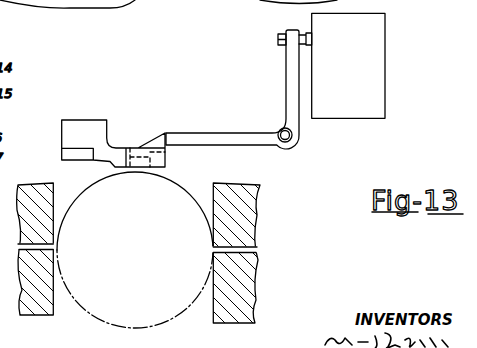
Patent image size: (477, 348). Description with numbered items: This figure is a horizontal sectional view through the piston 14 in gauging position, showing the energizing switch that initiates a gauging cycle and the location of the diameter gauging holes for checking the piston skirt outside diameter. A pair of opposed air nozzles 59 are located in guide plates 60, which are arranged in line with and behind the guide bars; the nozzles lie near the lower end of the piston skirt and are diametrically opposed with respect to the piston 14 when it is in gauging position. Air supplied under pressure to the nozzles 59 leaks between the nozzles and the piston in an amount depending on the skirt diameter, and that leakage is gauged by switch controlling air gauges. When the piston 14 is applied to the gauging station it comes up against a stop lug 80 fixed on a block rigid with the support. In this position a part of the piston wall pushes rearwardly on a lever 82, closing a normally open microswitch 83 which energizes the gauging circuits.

The piston 14 is at (125, 328).
The air nozzles 59 is at (23, 273).
The guide plates 60 is at (97, 262).
The stop lug 80 is at (116, 165).
The lever 82 is at (204, 133).
The microswitch 83 is at (385, 48).